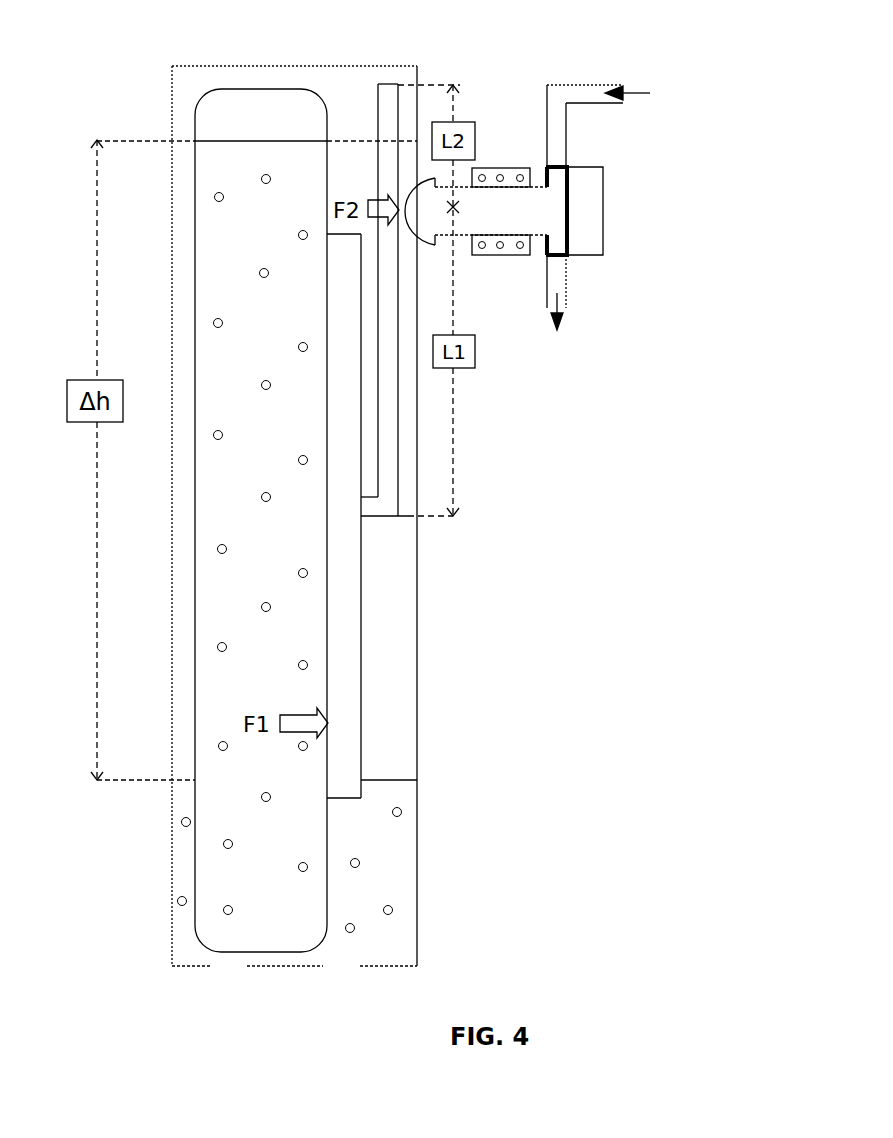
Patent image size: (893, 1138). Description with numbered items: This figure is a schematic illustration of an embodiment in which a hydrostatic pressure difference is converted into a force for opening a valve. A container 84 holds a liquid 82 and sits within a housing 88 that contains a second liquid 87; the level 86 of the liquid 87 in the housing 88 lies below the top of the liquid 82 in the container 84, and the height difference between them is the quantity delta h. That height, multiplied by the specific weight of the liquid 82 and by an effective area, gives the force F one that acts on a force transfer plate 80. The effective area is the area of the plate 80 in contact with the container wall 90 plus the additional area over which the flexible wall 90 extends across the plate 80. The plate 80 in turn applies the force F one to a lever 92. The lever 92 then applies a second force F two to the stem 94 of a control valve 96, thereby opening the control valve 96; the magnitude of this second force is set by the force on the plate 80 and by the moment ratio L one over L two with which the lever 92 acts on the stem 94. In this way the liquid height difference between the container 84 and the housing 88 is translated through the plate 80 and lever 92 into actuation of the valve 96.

The force transfer plate 80 is at (343, 798).
The liquid 82 is at (285, 160).
The container 84 is at (210, 93).
The level 86 is at (185, 780).
The liquid 87 is at (186, 853).
The housing 88 is at (417, 683).
The container wall 90 is at (327, 478).
The lever 92 is at (388, 385).
The stem 94 is at (463, 237).
The control valve 96 is at (583, 193).